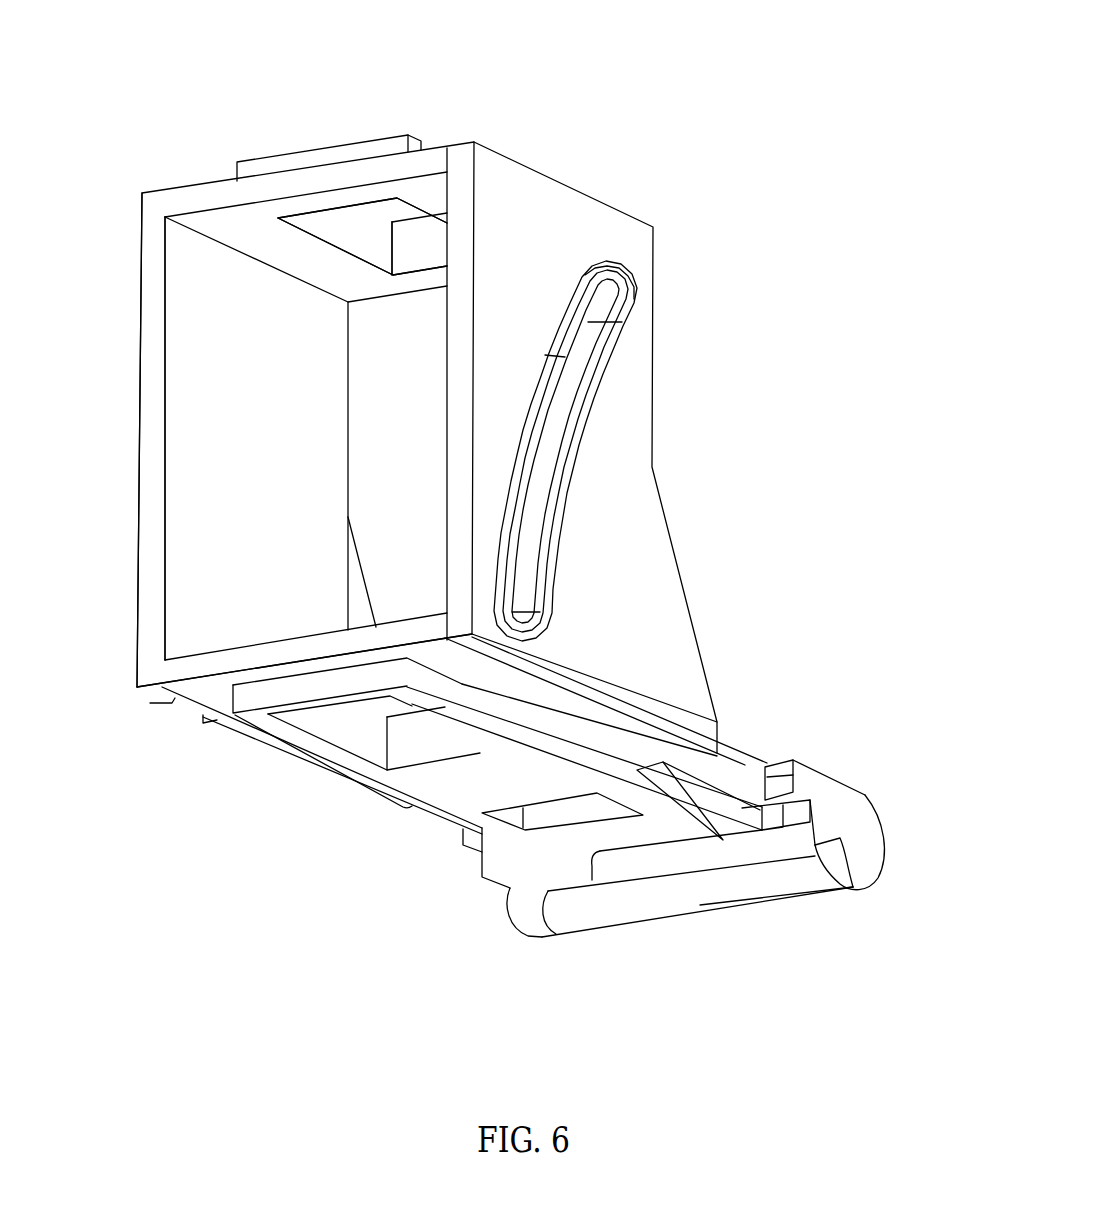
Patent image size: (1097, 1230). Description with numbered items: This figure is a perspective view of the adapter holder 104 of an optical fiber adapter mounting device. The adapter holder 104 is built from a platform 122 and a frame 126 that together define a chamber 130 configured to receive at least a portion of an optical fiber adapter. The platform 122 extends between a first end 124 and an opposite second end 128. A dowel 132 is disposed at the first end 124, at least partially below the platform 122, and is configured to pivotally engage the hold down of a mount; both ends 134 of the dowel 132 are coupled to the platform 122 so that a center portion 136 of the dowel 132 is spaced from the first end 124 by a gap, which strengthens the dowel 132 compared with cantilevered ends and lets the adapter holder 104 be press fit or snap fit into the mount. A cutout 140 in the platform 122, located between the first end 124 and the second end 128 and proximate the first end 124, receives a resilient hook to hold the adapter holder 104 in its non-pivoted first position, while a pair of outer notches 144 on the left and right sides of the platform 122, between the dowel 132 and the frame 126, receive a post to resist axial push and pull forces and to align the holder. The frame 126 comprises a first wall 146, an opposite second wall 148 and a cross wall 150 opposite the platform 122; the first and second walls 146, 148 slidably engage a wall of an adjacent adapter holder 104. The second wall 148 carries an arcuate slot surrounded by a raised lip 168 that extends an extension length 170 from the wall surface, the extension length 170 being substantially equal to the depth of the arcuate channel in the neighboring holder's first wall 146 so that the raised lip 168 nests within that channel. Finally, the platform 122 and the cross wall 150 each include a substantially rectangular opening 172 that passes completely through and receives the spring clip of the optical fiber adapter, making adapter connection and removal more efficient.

The adapter holder 104 is at (813, 90).
The platform 122 is at (478, 793).
The first end 124 is at (847, 787).
The frame 126 is at (190, 195).
The second end 128 is at (143, 695).
The chamber 130 is at (225, 305).
The dowel 132 is at (785, 900).
The ends of the dowel 134 is at (853, 887).
The center portion of the dowel 136 is at (688, 913).
The cutout 140 is at (548, 818).
The outer notches 144 is at (747, 750).
The first wall 146 is at (651, 388).
The second wall 148 is at (143, 480).
The cross wall 150 is at (441, 147).
The raised lip 168 is at (560, 492).
The extension length 170 is at (517, 357).
The opening 172 is at (384, 240).